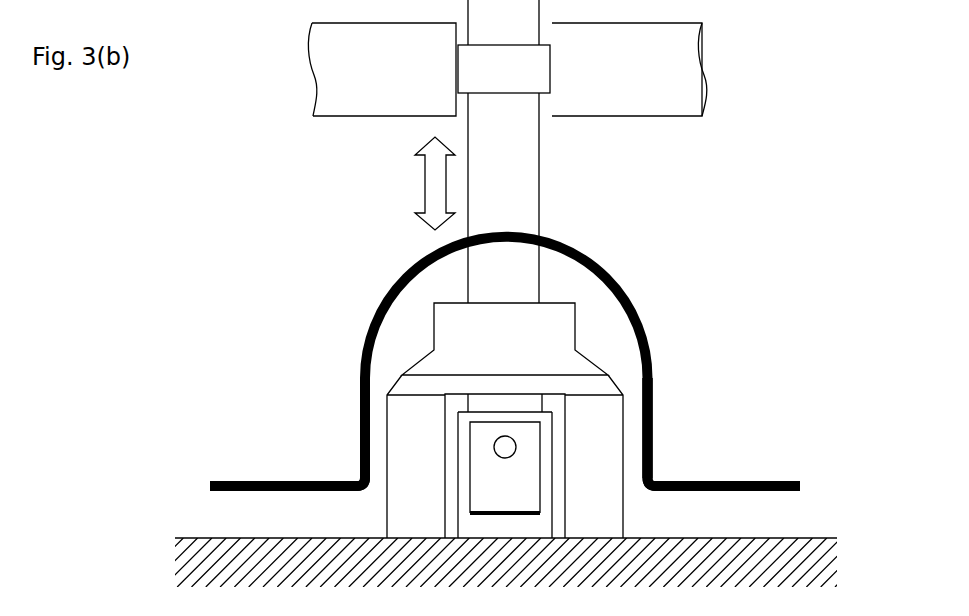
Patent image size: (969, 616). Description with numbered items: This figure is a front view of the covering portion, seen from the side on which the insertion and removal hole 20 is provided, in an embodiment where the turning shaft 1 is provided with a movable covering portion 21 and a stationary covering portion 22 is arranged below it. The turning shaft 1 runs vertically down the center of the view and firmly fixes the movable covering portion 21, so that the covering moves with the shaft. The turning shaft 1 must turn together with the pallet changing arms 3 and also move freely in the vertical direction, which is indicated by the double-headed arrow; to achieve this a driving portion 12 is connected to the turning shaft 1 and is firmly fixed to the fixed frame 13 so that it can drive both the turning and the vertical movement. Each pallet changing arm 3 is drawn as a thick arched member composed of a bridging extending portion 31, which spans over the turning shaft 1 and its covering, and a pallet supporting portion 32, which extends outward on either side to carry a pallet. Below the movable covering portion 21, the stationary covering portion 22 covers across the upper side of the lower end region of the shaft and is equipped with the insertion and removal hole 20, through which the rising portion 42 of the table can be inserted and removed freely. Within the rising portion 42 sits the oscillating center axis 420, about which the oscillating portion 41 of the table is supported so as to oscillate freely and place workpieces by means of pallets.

The turning shaft 1 is at (507, 398).
The pallet changing arm 3 is at (280, 300).
The driving portion 12 is at (515, 75).
The fixed frame 13 is at (385, 92).
The insertion and removal hole 20 is at (390, 313).
The movable covering portion 21 is at (457, 317).
The stationary covering portion 22 is at (387, 432).
The bridging extending portion 31 is at (358, 385).
The pallet supporting portion 32 is at (288, 482).
The oscillating portion of table 41 is at (485, 510).
The rising portion of table 42 is at (545, 420).
The oscillating center axis of rising portion 420 is at (507, 448).